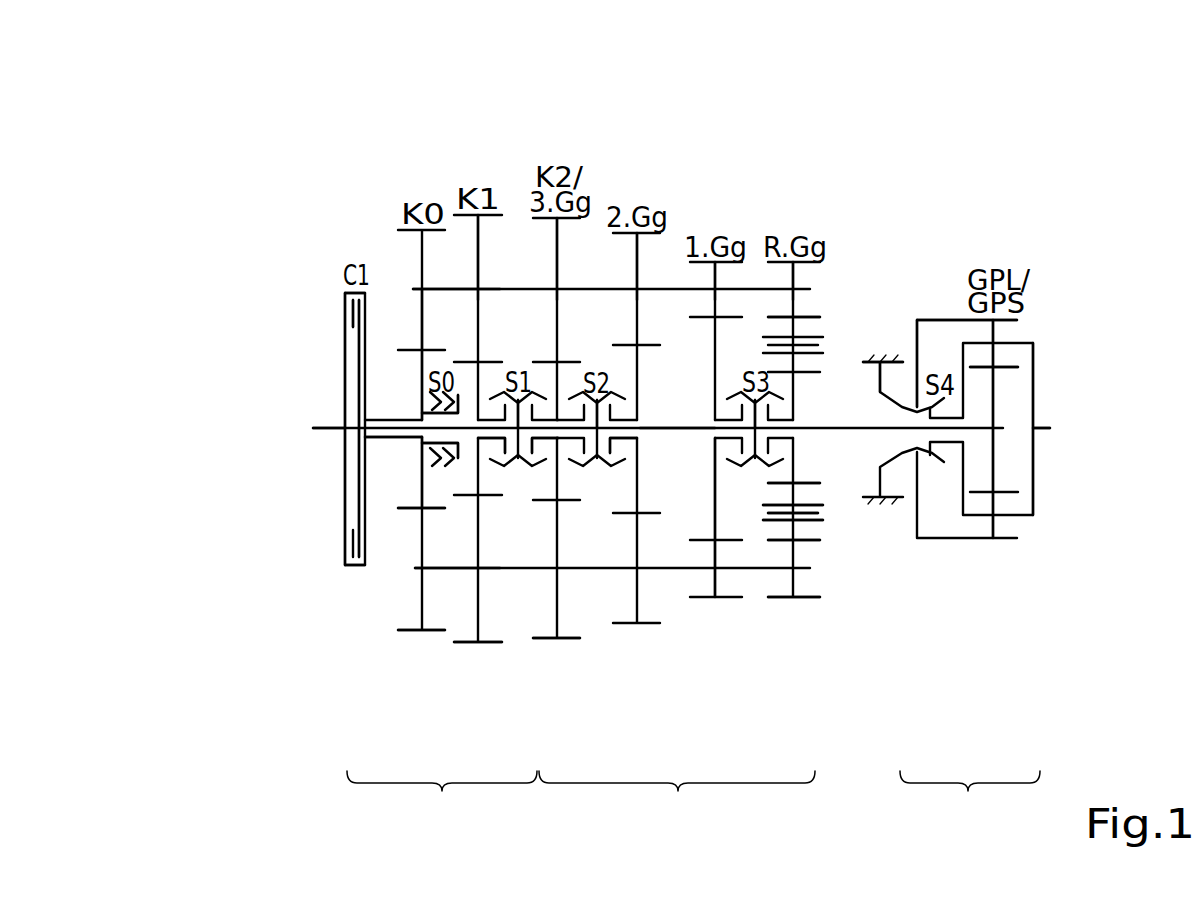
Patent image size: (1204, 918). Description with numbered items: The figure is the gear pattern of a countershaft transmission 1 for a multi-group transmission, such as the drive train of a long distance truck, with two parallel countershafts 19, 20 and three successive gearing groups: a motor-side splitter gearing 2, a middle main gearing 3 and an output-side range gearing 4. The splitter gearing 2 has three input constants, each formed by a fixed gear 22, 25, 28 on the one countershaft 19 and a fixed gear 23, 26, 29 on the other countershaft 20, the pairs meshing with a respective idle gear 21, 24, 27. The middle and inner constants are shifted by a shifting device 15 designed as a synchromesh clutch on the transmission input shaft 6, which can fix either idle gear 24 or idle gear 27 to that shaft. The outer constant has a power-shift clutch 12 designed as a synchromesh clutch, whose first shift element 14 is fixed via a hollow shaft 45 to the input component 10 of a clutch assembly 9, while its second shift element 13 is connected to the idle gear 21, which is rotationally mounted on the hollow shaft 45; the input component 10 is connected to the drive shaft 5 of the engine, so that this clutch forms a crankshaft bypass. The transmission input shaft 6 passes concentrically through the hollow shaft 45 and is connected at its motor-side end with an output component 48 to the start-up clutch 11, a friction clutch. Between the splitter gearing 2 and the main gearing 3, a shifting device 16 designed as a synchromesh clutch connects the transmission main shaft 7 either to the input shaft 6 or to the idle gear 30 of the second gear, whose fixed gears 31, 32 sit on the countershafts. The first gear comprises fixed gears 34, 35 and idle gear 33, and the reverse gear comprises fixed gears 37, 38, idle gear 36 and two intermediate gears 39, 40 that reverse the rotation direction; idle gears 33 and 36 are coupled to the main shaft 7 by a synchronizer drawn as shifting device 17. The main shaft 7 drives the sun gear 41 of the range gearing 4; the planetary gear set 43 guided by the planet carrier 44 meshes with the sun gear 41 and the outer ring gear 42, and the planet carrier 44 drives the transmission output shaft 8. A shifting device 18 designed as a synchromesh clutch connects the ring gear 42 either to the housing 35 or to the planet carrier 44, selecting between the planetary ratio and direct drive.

The countershaft transmission 1 is at (254, 230).
The splitter gearing 2 is at (444, 813).
The main gearing 3 is at (679, 813).
The range gearing 4 is at (967, 813).
The drive shaft 5 is at (261, 423).
The transmission input shaft 6 is at (300, 460).
The transmission main shaft 7 is at (739, 604).
The transmission output shaft 8 is at (1092, 453).
The clutch assembly 9 is at (271, 587).
The input component 10 is at (256, 420).
The start-up clutch 11 is at (262, 428).
The output component 48 is at (250, 344).
The power-shift clutch 12 is at (377, 251).
The second shift element 13 is at (295, 479).
The first shift element 14 is at (407, 607).
The shifting device 15 is at (466, 259).
The shifting device 16 is at (559, 259).
The shift element S3 17 is at (720, 259).
The shifting device 18 is at (922, 248).
The countershaft 19 is at (331, 255).
The countershaft 20 is at (369, 692).
The idle gear 21 is at (306, 527).
The fixed gear 22 is at (341, 190).
The fixed gear 23 is at (369, 669).
The idle gear 24 is at (483, 684).
The fixed gear 25 is at (415, 195).
The fixed gear 26 is at (463, 604).
The idle gear 27 is at (537, 604).
The fixed gear 28 is at (509, 195).
The fixed gear 29 is at (567, 689).
The idle gear 30 is at (624, 604).
The fixed gear 31 is at (621, 195).
The fixed gear 32 is at (677, 599).
The idle gear 33 is at (825, 677).
The fixed gear 34 is at (671, 195).
The fixed gear 35 is at (809, 430).
The idle gear 36 is at (905, 638).
The fixed gear 37 is at (802, 203).
The fixed gear 38 is at (853, 655).
The intermediate gear 39 is at (766, 195).
The intermediate gear 40 is at (881, 615).
The sun gear 41 is at (1068, 358).
The ring gear 42 is at (967, 205).
The planetary gear set 43 is at (1080, 405).
The planet carrier 44 is at (1100, 429).
The hollow shaft 45 is at (265, 289).